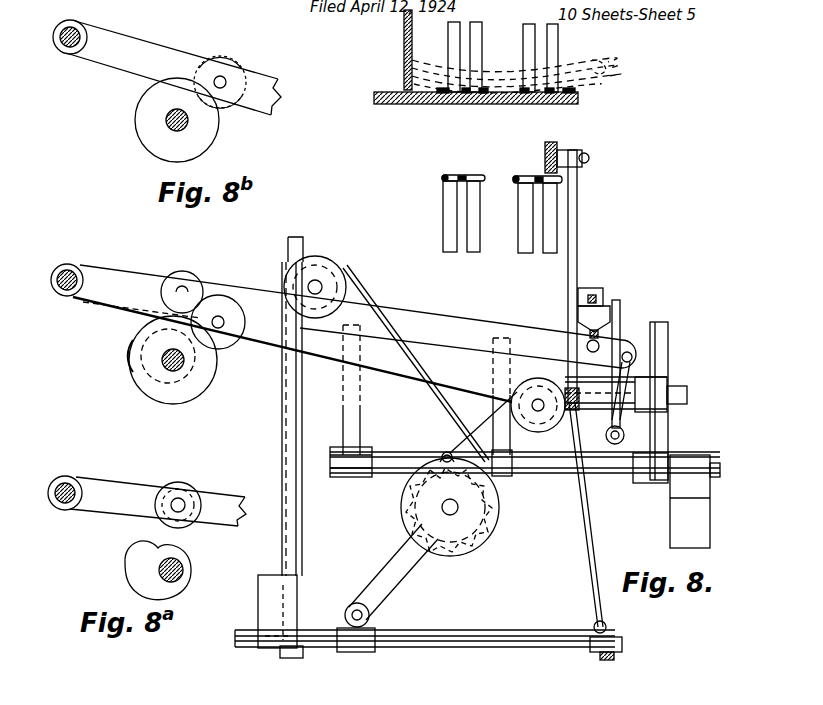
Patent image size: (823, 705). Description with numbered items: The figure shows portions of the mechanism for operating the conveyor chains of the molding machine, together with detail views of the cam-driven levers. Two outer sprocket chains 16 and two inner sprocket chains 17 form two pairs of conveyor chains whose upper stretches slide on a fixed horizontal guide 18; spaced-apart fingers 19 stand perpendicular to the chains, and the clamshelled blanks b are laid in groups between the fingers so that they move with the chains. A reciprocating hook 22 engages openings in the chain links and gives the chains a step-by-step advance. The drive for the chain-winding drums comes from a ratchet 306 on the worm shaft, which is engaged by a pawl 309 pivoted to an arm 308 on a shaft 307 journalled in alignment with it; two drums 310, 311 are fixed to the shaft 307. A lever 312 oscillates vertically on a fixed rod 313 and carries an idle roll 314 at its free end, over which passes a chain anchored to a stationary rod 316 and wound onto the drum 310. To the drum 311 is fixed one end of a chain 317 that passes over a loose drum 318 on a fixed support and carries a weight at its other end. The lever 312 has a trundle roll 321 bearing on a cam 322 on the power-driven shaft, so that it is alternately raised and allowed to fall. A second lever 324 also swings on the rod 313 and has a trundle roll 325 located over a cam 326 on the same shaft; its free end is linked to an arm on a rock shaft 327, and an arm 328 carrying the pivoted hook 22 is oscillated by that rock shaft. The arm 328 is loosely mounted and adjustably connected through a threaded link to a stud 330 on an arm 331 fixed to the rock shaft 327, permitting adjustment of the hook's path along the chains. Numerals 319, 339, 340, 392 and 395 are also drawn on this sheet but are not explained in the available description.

In FIG. 8, the sprocket chain 16 is at (443, 104).
In FIG. 8, the sprocket chain 17 is at (478, 104).
In FIG. 8, the fixed horizontal guide 18 is at (500, 104).
In FIG. 8, the finger 19 is at (448, 44).
In FIG. 8, the blank b is at (516, 75).
In FIG. 8, the reciprocating hook 22 is at (560, 150).
In FIG. 8, the ratchet 306 is at (486, 513).
In FIG. 8, the shaft 307 is at (455, 516).
In FIG. 8, the arm 308 is at (404, 506).
In FIG. 8, the pawl 309 is at (442, 456).
In FIG. 8, the drum 310 is at (487, 536).
In FIG. 8, the drum 311 is at (445, 556).
In FIG. 8B, the lever 312 is at (108, 60).
In FIG. 8, the lever 312 is at (374, 370).
In FIG. 8B, the fixed rod 313 is at (62, 44).
In FIG. 8A, the fixed rod 313 is at (56, 480).
In FIG. 8, the fixed rod 313 is at (51, 282).
In FIG. 8, the idle roll 314 is at (530, 432).
In FIG. 8, the stationary rod 316 is at (540, 641).
In FIG. 8, the chain 317 is at (505, 331).
In FIG. 8, the loose drum 318 is at (328, 250).
In FIG. 8, the operating rod 319 is at (585, 512).
In FIG. 8B, the trundle roll 321 is at (218, 58).
In FIG. 8, the trundle roll 321 is at (228, 296).
In FIG. 8B, the cam 322 is at (147, 134).
In FIG. 8, the cam 322 is at (142, 372).
In FIG. 8A, the lever 324 is at (118, 485).
In FIG. 8, the lever 324 is at (488, 334).
In FIG. 8A, the trundle roll 325 is at (190, 483).
In FIG. 8, the trundle roll 325 is at (180, 272).
In FIG. 8A, the cam 326 is at (122, 553).
In FIG. 8, the cam 326 is at (128, 352).
In FIG. 8, the rock shaft 327 is at (605, 290).
In FIG. 8, the arm 328 is at (580, 258).
In FIG. 8, the stud 330 is at (608, 300).
In FIG. 8, the arm 331 is at (620, 338).
In FIG. 8, the member 339 is at (628, 704).
In FIG. 8, the member 340 is at (611, 691).
In FIG. 8, the slide block 392 is at (258, 600).
In FIG. 8B, the hub 395 is at (190, 122).
In FIG. 8A, the hub 395 is at (184, 568).
In FIG. 8, the hub 395 is at (185, 368).